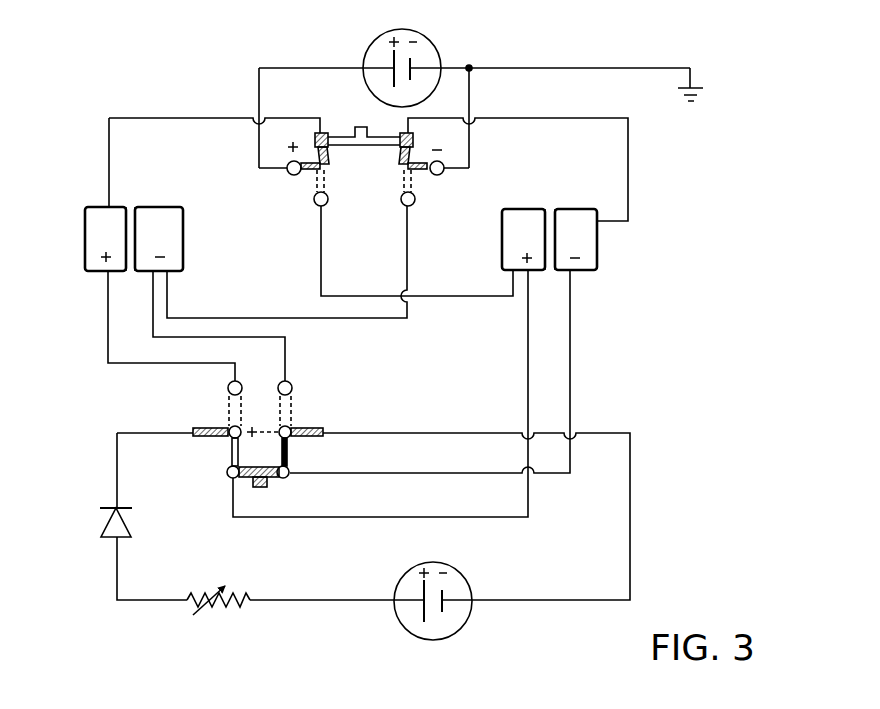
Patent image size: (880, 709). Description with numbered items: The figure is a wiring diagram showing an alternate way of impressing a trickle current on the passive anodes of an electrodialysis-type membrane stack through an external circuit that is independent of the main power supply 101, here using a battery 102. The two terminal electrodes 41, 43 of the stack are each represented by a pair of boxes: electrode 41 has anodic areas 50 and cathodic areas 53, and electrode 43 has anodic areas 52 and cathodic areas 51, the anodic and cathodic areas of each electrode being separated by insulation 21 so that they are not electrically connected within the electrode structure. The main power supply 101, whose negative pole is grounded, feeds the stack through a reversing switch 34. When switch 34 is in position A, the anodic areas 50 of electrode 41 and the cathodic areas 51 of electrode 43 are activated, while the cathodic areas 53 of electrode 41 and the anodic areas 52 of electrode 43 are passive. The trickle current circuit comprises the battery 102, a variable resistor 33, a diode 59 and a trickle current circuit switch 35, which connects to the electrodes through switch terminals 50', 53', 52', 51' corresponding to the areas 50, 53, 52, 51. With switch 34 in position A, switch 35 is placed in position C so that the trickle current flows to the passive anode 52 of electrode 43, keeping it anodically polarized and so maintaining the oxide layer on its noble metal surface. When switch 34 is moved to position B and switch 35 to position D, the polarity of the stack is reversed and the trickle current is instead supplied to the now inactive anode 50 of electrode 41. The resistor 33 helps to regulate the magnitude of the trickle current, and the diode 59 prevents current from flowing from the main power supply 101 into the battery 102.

The main power supply 101 is at (428, 36).
The switch 34 is at (362, 122).
The anodic areas of electrode 41 50 is at (105, 239).
The cathodic areas of electrode 41 53 is at (159, 239).
The terminal electrode 41 is at (103, 266).
The insulation 21 is at (129, 247).
The anodic areas of electrode 43 52 is at (523, 239).
The cathodic areas of electrode 43 51 is at (576, 239).
The terminal electrode 43 is at (580, 268).
The switch terminal for anodic area 50 50' is at (211, 402).
The switch terminal for cathodic area 53 53' is at (305, 402).
The switch terminal for anodic area 52 52' is at (212, 447).
The switch terminal for cathodic area 51 51' is at (301, 447).
The trickle current circuit switch 35 is at (254, 469).
The diode 59 is at (106, 522).
The variable resistor 33 is at (232, 607).
The battery 102 is at (469, 607).
The switch position A is at (433, 149).
The switch position B is at (418, 200).
The switch position C is at (430, 371).
The switch position D is at (440, 503).